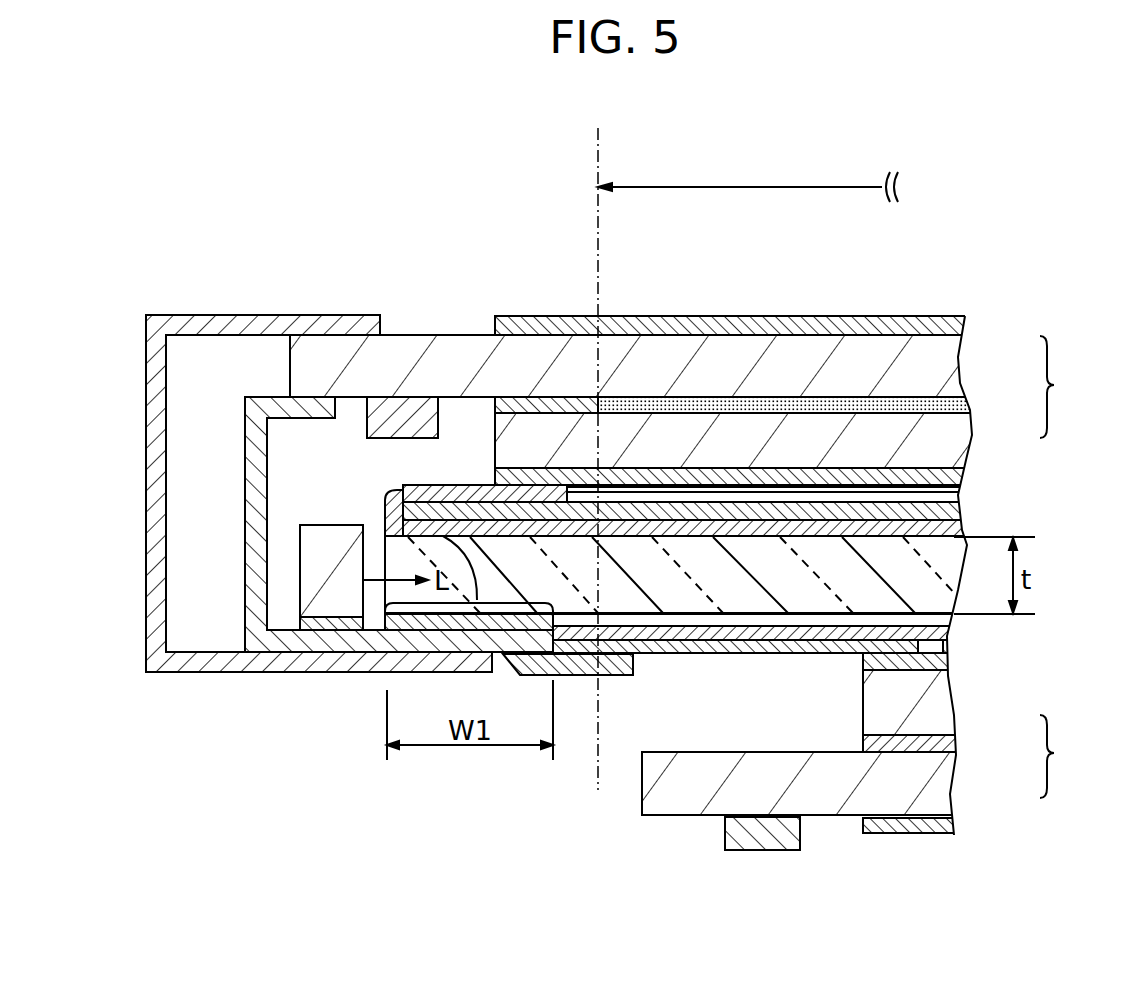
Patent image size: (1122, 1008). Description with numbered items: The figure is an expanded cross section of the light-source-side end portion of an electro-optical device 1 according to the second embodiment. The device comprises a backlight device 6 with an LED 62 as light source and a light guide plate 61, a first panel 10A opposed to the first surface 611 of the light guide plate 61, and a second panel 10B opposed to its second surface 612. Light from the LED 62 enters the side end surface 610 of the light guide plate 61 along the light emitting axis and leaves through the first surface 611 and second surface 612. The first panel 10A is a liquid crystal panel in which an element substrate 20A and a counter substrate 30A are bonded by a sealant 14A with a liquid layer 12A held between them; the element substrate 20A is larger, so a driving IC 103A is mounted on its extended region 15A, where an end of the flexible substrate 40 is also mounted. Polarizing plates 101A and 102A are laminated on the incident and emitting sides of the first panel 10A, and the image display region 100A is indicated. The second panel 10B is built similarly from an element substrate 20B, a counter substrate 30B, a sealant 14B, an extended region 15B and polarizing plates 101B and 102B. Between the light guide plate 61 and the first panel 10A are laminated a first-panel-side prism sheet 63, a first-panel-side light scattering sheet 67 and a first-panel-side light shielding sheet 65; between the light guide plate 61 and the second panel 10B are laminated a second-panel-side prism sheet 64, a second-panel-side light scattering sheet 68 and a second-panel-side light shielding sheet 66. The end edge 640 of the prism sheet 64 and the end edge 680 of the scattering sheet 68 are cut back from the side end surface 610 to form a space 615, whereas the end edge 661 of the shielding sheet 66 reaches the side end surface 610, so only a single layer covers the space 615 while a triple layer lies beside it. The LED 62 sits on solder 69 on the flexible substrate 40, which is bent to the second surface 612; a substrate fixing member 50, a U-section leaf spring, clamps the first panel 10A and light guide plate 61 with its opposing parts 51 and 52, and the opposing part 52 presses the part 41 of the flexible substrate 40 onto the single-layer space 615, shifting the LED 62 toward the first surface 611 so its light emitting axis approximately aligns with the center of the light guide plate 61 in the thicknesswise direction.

The electro-optical device 1 is at (450, 140).
The image display region 100A is at (744, 187).
The substrate fixing member 50 is at (146, 350).
The opposing part 51 is at (353, 317).
The opposing part 52 is at (233, 673).
The flexible substrate 40 is at (262, 397).
The part of the flexible substrate 41 is at (422, 653).
The end edge 661 is at (378, 653).
The driving IC 103A is at (384, 399).
The extended region 15A is at (470, 398).
The element substrate 20A is at (947, 362).
The polarizing plate 102A is at (760, 318).
The sealant 14A is at (543, 397).
The liquid layer 12A is at (840, 397).
The counter substrate 30A is at (947, 435).
The polarizing plate 101A is at (947, 470).
The first-panel-side light scattering sheet 67 is at (650, 487).
The first-panel-side light shielding sheet 65 is at (477, 487).
The space 615 is at (412, 485).
The side end surface 610 is at (385, 580).
The light guide plate 61 is at (858, 600).
The end edge 640 is at (535, 668).
The end edge 680 is at (556, 675).
The first surface 611 is at (720, 626).
The second surface 612 is at (803, 640).
The first-panel-side prism sheet 63 is at (678, 645).
The second-panel-side prism sheet 64 is at (708, 640).
The second-panel-side light shielding sheet 66 is at (663, 652).
The polarizing plate 101B is at (948, 662).
The counter substrate 30B is at (947, 712).
The sealant 14B is at (870, 747).
The element substrate 20B is at (949, 770).
The polarizing plate 102B is at (907, 834).
The extended region 15B is at (668, 819).
The second-panel-side light scattering sheet 68 is at (643, 674).
The LED 62 is at (332, 540).
The solder 69 is at (306, 631).
The backlight device 6 is at (302, 506).
The first panel 10A is at (1070, 387).
The second panel 10B is at (1071, 756).